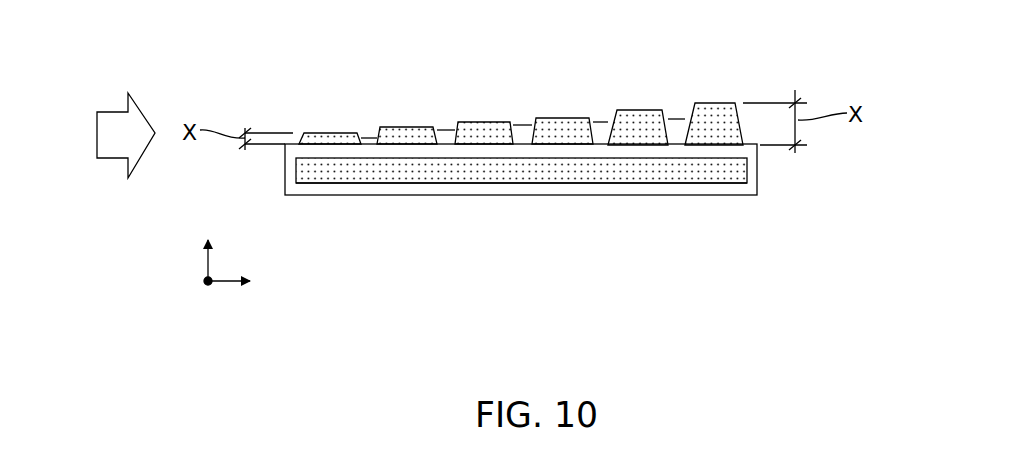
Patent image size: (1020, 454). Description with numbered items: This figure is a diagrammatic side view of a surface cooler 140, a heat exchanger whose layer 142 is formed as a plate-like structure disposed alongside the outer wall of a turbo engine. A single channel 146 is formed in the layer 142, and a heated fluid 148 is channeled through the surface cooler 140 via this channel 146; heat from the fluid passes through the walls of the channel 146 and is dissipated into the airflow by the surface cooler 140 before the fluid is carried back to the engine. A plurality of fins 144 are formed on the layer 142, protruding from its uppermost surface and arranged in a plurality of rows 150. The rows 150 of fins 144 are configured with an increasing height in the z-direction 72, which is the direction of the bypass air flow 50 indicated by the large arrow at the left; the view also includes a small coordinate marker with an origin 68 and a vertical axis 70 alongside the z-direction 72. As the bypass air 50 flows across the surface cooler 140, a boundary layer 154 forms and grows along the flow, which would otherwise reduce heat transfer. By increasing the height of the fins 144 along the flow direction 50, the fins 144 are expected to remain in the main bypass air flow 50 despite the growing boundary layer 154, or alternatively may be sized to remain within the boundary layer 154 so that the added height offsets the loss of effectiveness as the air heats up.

The bypass air flow 50 is at (105, 158).
The coordinate origin 68 is at (203, 283).
The vertical axis 70 is at (207, 257).
The z-direction 72 is at (240, 282).
The surface cooler 140 is at (297, 107).
The layer 142 is at (757, 172).
The fins 144 is at (717, 103).
The channel 146 is at (630, 183).
The heated fluid 148 is at (455, 172).
The rows of fins 150 is at (408, 127).
The boundary layer 154 is at (678, 118).